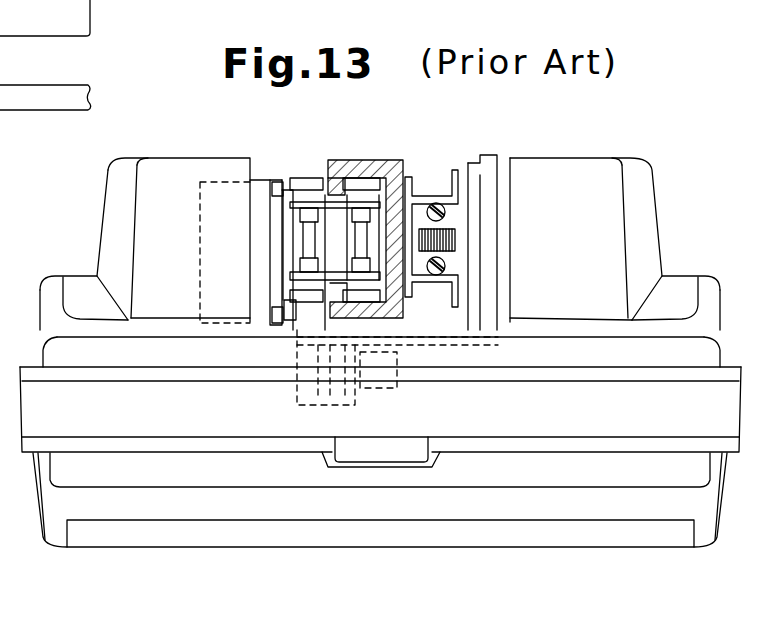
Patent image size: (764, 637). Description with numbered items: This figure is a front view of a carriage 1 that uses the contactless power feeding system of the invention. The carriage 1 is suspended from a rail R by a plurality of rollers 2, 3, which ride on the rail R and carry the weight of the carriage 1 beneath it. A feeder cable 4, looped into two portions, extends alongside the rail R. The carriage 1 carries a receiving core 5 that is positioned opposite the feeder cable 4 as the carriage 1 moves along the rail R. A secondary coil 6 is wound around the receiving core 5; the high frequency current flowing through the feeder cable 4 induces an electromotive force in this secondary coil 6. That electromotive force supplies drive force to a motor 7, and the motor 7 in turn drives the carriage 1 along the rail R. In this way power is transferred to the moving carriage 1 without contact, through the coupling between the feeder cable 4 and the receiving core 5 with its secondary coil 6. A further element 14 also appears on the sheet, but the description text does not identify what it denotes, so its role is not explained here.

The carriage 1 is at (276, 548).
The rollers 2 is at (328, 186).
The rollers 3 is at (301, 178).
The feeder cable 4 is at (446, 211).
The receiving core 5 is at (411, 222).
The secondary coil 6 is at (421, 256).
The motor 7 is at (266, 178).
The arm member 14 is at (33, 111).
The rail R is at (397, 158).